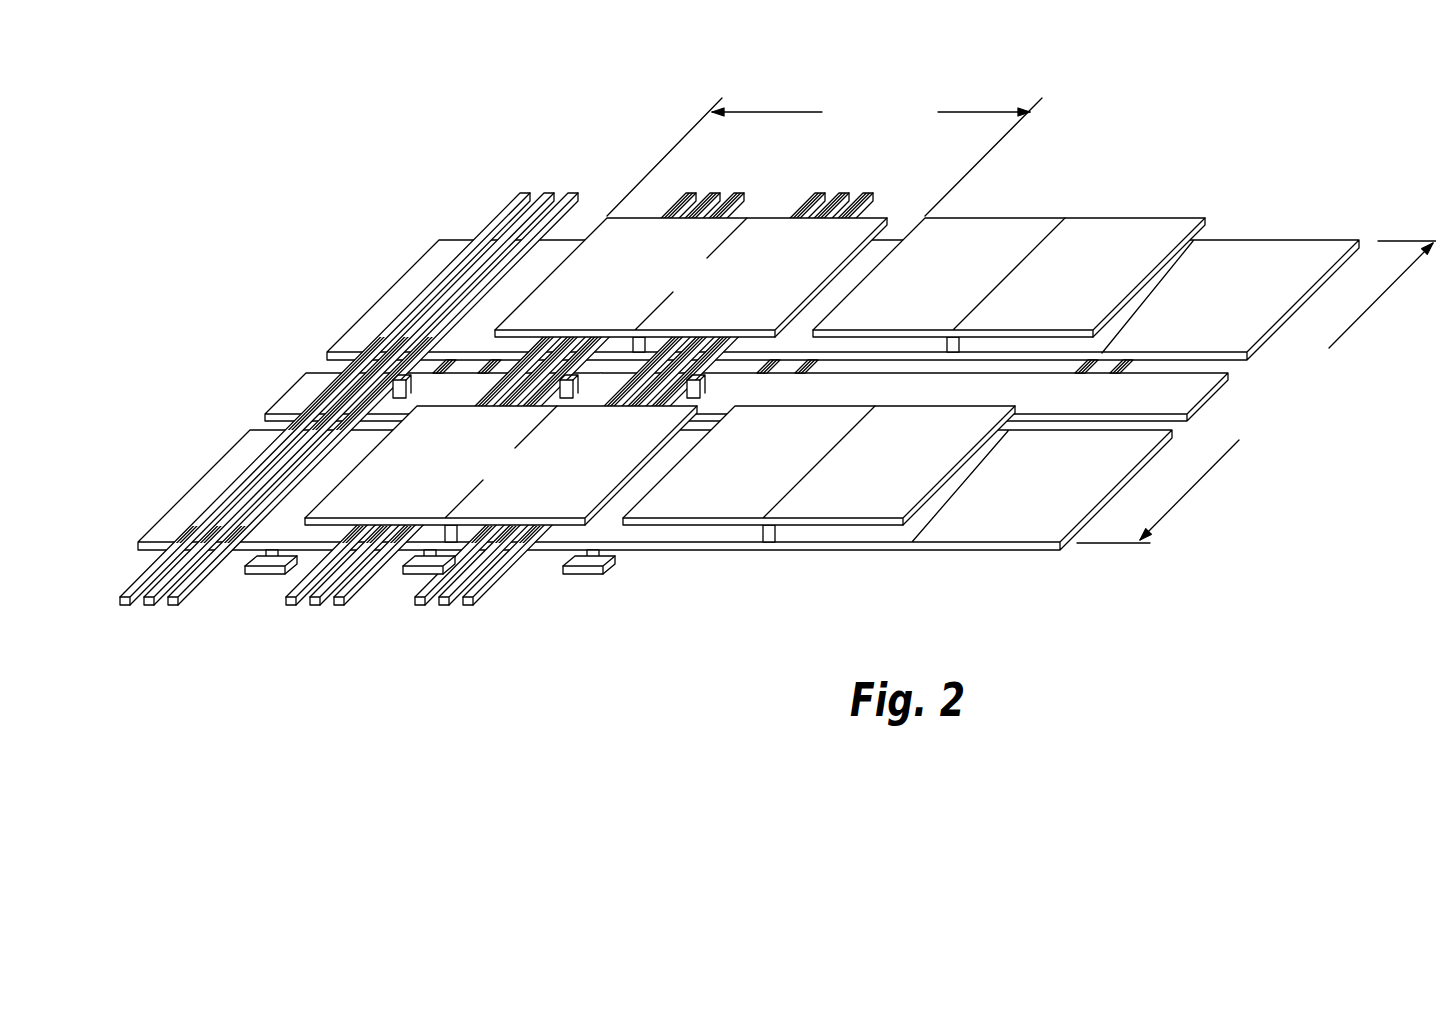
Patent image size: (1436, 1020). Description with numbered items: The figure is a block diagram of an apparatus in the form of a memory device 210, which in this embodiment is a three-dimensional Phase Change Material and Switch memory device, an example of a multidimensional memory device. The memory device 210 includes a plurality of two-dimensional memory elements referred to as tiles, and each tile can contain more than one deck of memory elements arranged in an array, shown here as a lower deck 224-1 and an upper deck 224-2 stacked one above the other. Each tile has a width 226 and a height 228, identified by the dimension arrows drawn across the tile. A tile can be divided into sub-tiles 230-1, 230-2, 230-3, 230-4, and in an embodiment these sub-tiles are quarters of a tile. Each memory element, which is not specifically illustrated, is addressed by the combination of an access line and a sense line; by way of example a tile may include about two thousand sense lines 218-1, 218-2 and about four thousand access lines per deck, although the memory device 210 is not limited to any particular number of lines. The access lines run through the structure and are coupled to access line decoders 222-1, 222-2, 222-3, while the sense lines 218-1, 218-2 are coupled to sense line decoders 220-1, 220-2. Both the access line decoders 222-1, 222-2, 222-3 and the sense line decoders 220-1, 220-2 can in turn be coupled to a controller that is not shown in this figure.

The memory device 210 is at (295, 150).
The sense line 218-1 is at (720, 180).
The sense line 218-2 is at (850, 180).
The sense line decoder 220-1 is at (305, 395).
The sense line decoder 220-2 is at (852, 401).
The access line decoder 222-1 is at (267, 570).
The access line decoder 222-2 is at (423, 570).
The access line decoder 222-3 is at (583, 570).
The lower deck 224-1 is at (662, 600).
The upper deck 224-2 is at (596, 182).
The width 226 is at (808, 112).
The height 228 is at (1218, 463).
The sub-tile 230-1 is at (563, 540).
The sub-tile 230-2 is at (600, 207).
The sub-tile 230-3 is at (530, 475).
The sub-tile 230-4 is at (718, 286).